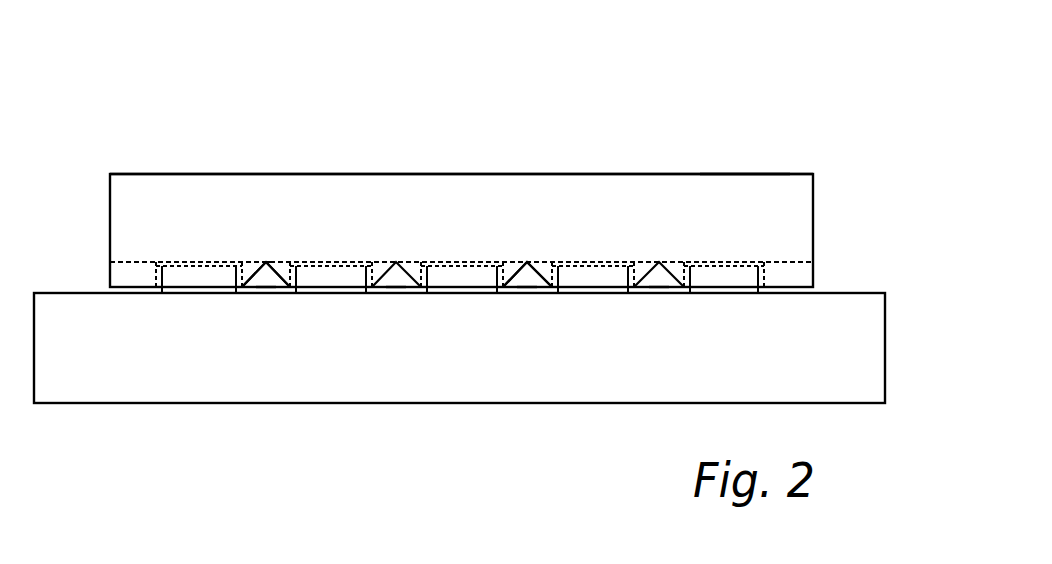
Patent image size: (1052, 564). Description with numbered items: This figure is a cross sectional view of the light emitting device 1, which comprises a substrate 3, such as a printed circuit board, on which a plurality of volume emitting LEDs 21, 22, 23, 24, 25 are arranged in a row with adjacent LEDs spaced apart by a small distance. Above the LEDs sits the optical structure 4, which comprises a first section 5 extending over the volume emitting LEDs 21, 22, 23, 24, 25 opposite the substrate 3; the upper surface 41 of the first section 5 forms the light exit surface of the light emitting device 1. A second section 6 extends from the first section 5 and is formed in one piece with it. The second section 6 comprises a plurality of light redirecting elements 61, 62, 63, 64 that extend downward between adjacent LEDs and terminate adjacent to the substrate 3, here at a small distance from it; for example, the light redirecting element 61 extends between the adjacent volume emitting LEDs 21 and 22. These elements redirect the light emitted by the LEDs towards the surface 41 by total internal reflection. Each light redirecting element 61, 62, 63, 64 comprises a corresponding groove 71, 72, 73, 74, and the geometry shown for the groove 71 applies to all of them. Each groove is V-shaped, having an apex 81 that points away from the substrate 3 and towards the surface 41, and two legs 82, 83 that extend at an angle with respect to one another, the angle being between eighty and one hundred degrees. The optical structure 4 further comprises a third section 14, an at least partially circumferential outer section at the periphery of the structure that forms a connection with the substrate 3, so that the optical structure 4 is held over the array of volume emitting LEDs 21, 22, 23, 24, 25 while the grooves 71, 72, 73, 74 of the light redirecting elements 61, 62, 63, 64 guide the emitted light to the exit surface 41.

The light emitting device 1 is at (105, 72).
The substrate 3 is at (195, 380).
The optical structure 4 is at (205, 174).
The first section 5 is at (762, 202).
The second section 6 is at (517, 270).
The third section 14 is at (800, 275).
The volume emitting LED 21 is at (205, 273).
The volume emitting LED 22 is at (340, 273).
The volume emitting LED 23 is at (472, 273).
The volume emitting LED 24 is at (588, 275).
The volume emitting LED 25 is at (720, 275).
The surface 41 is at (747, 174).
The light redirecting element 61 is at (273, 267).
The light redirecting element 62 is at (415, 273).
The light redirecting element 63 is at (542, 275).
The light redirecting element 64 is at (673, 275).
The groove 71 is at (266, 290).
The groove 72 is at (393, 293).
The groove 73 is at (532, 293).
The groove 74 is at (658, 293).
The apex 81 is at (263, 260).
The leg 82 is at (253, 288).
The leg 83 is at (280, 290).